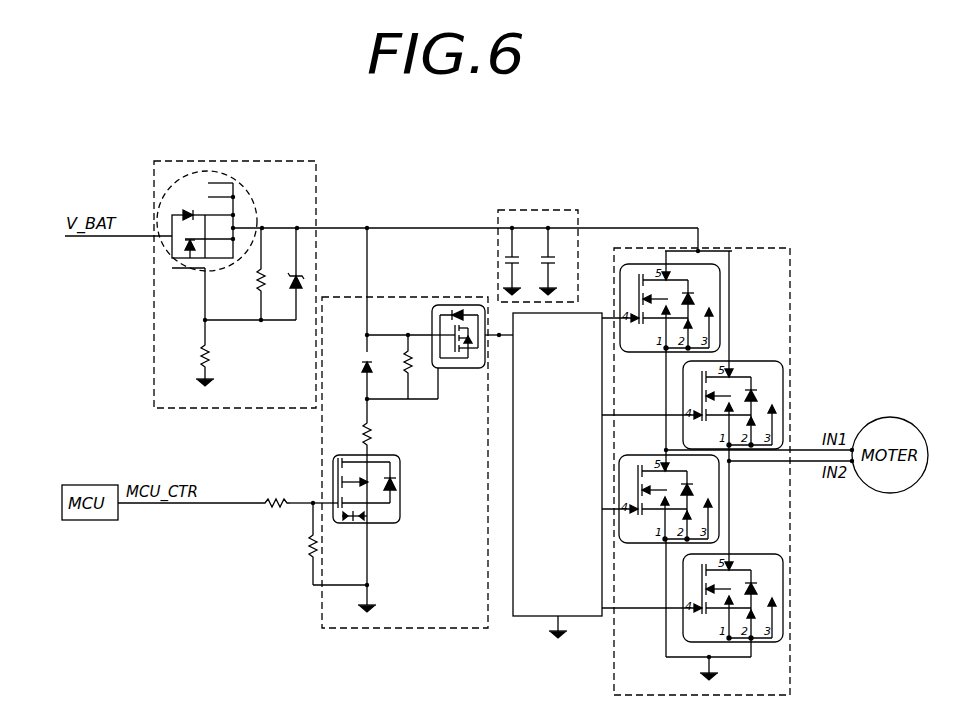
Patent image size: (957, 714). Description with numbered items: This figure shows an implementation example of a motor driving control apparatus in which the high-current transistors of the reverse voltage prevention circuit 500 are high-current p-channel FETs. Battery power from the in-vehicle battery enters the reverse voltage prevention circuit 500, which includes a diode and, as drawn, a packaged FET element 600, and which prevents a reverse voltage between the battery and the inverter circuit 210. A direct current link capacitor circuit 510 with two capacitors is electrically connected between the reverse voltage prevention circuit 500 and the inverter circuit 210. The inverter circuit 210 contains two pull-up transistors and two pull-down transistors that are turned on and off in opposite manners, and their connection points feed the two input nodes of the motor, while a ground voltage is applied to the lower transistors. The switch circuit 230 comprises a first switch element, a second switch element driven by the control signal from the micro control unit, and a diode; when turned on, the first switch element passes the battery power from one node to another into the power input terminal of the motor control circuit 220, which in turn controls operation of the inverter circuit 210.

The reverse voltage prevention circuit 500 is at (180, 160).
The battery connection terminal 600 is at (210, 181).
The direct current link capacitor circuit 510 is at (513, 210).
The switch circuit 230 is at (360, 630).
The motor control circuit 220 is at (519, 618).
The inverter circuit 210 is at (614, 678).